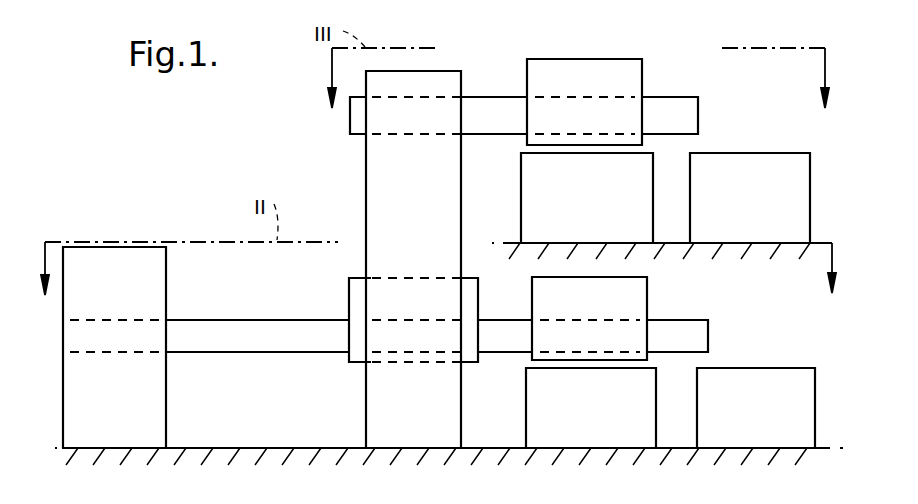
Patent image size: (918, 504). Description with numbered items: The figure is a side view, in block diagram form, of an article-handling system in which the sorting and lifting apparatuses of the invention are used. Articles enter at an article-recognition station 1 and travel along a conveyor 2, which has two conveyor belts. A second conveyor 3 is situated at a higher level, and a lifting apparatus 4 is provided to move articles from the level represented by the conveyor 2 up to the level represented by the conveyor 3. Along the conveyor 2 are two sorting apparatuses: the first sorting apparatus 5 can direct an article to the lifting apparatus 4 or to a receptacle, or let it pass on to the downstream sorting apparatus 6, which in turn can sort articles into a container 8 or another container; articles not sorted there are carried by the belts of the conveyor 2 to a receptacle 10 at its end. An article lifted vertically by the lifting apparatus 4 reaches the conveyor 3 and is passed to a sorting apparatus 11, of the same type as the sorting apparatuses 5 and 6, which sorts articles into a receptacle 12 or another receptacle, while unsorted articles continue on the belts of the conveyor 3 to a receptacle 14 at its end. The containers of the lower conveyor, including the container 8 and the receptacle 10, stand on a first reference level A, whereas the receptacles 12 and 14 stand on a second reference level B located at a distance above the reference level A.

The article-recognition station 1 is at (143, 277).
The conveyor 2 is at (262, 340).
The conveyor 3 is at (689, 115).
The lifting apparatus 4 is at (382, 213).
The sorting apparatus 5 is at (353, 298).
The sorting apparatus 6 is at (540, 298).
The container 8 is at (600, 419).
The receptacle 10 is at (768, 419).
The sorting apparatus 11 is at (585, 70).
The receptacle 12 is at (598, 212).
The receptacle 14 is at (762, 212).
The first reference level A is at (212, 448).
The second reference level B is at (507, 243).